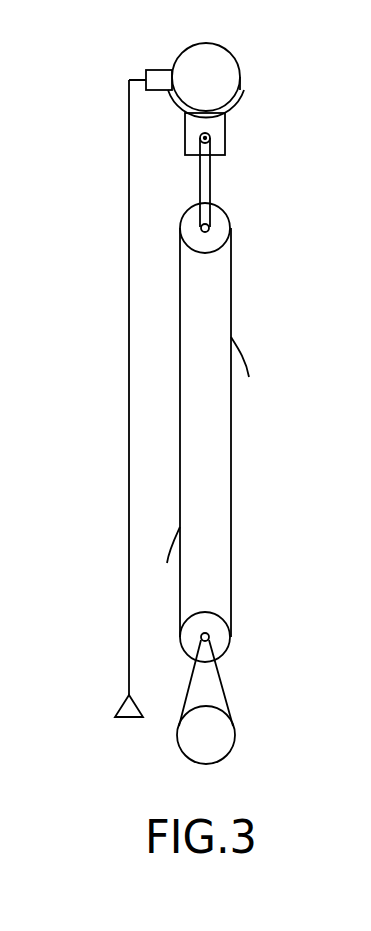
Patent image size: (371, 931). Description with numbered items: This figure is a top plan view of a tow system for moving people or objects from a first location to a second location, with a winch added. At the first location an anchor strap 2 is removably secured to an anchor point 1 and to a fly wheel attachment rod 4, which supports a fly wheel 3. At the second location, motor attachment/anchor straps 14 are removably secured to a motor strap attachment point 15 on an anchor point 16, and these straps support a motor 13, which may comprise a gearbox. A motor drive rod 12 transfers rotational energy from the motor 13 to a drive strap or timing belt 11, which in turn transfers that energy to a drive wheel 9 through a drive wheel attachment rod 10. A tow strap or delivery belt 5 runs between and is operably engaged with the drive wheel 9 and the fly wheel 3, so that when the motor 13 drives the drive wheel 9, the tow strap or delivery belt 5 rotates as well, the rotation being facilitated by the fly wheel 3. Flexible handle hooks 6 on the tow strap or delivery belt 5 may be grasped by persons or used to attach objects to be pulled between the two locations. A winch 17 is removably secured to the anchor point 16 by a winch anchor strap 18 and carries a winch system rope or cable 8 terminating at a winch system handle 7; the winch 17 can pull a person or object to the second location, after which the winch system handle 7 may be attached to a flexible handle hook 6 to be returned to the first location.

The anchor point 1 is at (235, 735).
The anchor strap 2 is at (225, 687).
The fly wheel 3 is at (223, 643).
The fly wheel attachment rod 4 is at (210, 635).
The tow strap or delivery belt 5 is at (231, 550).
The flexible handle hooks 6 is at (242, 355).
The winch system handle 7 is at (115, 710).
The winch system rope or cable 8 is at (129, 623).
The drive wheel 9 is at (223, 233).
The drive wheel attachment rod 10 is at (180, 228).
The drive strap or timing belt 11 is at (212, 175).
The motor drive rod 12 is at (210, 138).
The motor 13 is at (221, 127).
The motor attachment/anchor straps 14 is at (233, 100).
The motor strap attachment point 15 is at (240, 80).
The anchor point 16 is at (197, 60).
The winch 17 is at (147, 72).
The winch anchor strap 18 is at (170, 92).